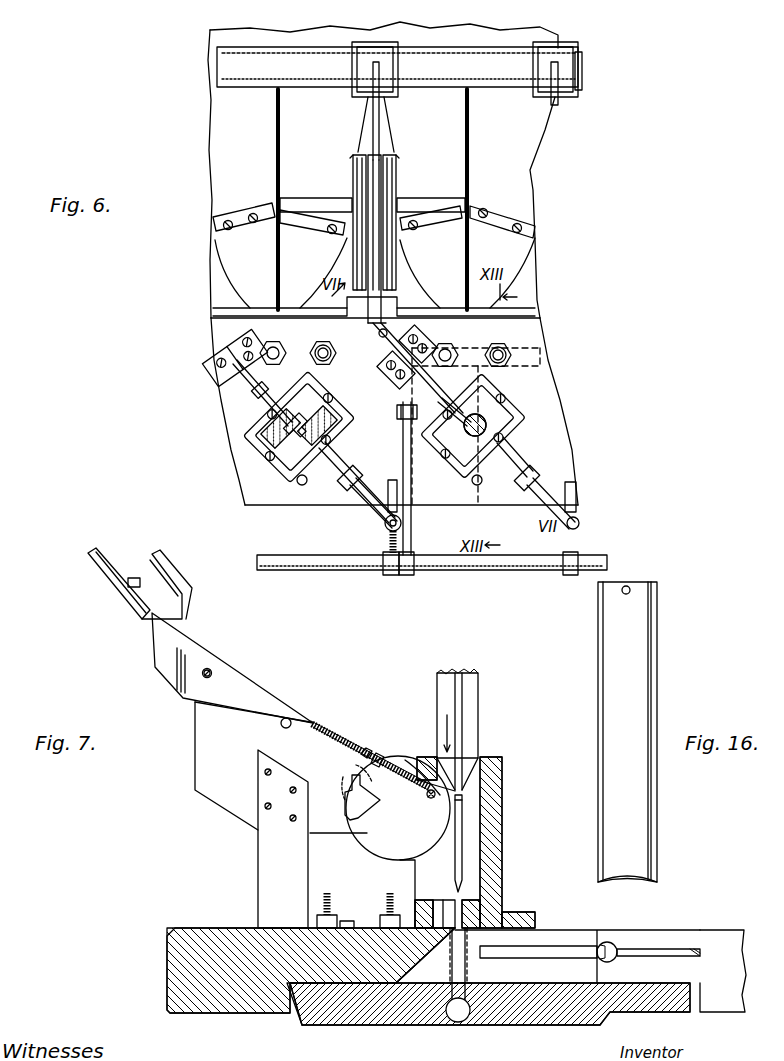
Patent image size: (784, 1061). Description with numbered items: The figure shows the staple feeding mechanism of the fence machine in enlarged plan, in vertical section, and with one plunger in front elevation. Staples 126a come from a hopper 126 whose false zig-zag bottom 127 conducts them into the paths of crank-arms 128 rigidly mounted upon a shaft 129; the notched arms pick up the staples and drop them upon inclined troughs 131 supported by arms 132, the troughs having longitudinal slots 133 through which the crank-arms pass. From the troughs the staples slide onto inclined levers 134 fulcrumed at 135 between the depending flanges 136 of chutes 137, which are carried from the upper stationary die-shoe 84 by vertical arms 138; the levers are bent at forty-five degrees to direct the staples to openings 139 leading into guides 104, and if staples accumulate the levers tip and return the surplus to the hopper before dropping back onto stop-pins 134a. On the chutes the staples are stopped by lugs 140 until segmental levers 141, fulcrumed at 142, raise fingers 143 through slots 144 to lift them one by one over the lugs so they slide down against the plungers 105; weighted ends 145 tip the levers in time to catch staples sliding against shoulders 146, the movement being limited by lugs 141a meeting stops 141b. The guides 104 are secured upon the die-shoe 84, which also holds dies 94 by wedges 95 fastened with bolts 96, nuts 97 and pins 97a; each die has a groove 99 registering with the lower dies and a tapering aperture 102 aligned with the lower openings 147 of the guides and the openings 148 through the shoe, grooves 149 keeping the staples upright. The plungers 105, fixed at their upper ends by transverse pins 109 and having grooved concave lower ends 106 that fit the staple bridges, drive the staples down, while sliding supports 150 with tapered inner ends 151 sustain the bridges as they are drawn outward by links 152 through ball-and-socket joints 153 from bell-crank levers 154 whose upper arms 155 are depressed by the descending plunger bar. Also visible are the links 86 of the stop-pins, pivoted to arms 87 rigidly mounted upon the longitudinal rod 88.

In FIG. 6, the upper stationary die-shoe 84 is at (238, 456).
In FIG. 7, the upper stationary die-shoe 84 is at (167, 950).
In FIG. 6, the links 86 is at (398, 412).
In FIG. 6, the arms 87 is at (402, 524).
In FIG. 6, the longitudinal rod 88 is at (432, 572).
In FIG. 6, the dies 94 is at (540, 413).
In FIG. 7, the dies 94 is at (490, 1019).
In FIG. 6, the wedges 95 is at (540, 353).
In FIG. 7, the wedges 95 is at (273, 1013).
In FIG. 6, the bolts 96 is at (273, 342).
In FIG. 7, the bolts 96 is at (327, 893).
In FIG. 6, the nuts 97 is at (323, 342).
In FIG. 7, the nuts 97 is at (345, 921).
In FIG. 6, the pins 97a is at (477, 486).
In FIG. 7, the groove 99 is at (457, 1022).
In FIG. 7, the tapering aperture 102 is at (468, 1022).
In FIG. 6, the guides 104 is at (322, 420).
In FIG. 7, the guides 104 is at (502, 856).
In FIG. 6, the plungers 105 is at (487, 418).
In FIG. 7, the plungers 105 is at (470, 721).
In FIG. 16, the plungers 105 is at (627, 732).
In FIG. 16, the grooved concave lower end 106 is at (628, 884).
In FIG. 16, the transverse pins 109 is at (631, 590).
In FIG. 6, the hopper 126 is at (210, 142).
In FIG. 7, the staples 126a is at (462, 872).
In FIG. 6, the false zig-zag bottom 127 is at (276, 151).
In FIG. 6, the crank-arms 128 is at (379, 125).
In FIG. 6, the shaft 129 is at (230, 71).
In FIG. 6, the inclined troughs 131 is at (396, 165).
In FIG. 7, the inclined troughs 131 is at (118, 590).
In FIG. 6, the arms 132 is at (322, 198).
In FIG. 6, the longitudinal slots 133 is at (381, 184).
In FIG. 7, the longitudinal slots 133 is at (132, 577).
In FIG. 6, the inclined levers 134 is at (370, 326).
In FIG. 7, the inclined levers 134 is at (232, 668).
In FIG. 7, the stop-pins 134a is at (289, 718).
In FIG. 6, the fulcrum 135 is at (380, 337).
In FIG. 7, the fulcrum 135 is at (211, 670).
In FIG. 6, the depending flanges 136 is at (385, 362).
In FIG. 7, the depending flanges 136 is at (252, 766).
In FIG. 6, the chutes 137 is at (252, 378).
In FIG. 7, the chutes 137 is at (358, 740).
In FIG. 6, the vertical arms 138 is at (218, 362).
In FIG. 7, the vertical arms 138 is at (283, 839).
In FIG. 6, the openings 139 is at (326, 437).
In FIG. 7, the openings 139 is at (406, 760).
In FIG. 6, the lugs 140 is at (270, 408).
In FIG. 7, the lugs 140 is at (380, 752).
In FIG. 6, the segmental levers 141 is at (276, 418).
In FIG. 7, the segmental levers 141 is at (380, 842).
In FIG. 7, the lugs 141a is at (347, 794).
In FIG. 7, the stops 141b is at (348, 819).
In FIG. 7, the fulcrum 142 is at (431, 797).
In FIG. 7, the fingers 143 is at (350, 782).
In FIG. 6, the slots 144 is at (459, 392).
In FIG. 7, the slots 144 is at (371, 746).
In FIG. 7, the weighted ends 145 is at (360, 836).
In FIG. 7, the shoulders 146 is at (480, 800).
In FIG. 7, the lower openings 147 is at (500, 898).
In FIG. 7, the openings 148 is at (436, 900).
In FIG. 7, the grooves 149 is at (520, 920).
In FIG. 6, the sliding supports 150 is at (505, 450).
In FIG. 7, the sliding supports 150 is at (577, 956).
In FIG. 7, the tapered inner ends 151 is at (459, 955).
In FIG. 6, the links 152 is at (375, 498).
In FIG. 7, the links 152 is at (670, 948).
In FIG. 6, the ball-and-socket joints 153 is at (345, 487).
In FIG. 7, the ball-and-socket joints 153 is at (612, 941).
In FIG. 6, the bell-crank levers 154 is at (393, 575).
In FIG. 6, the upper arms 155 is at (393, 480).